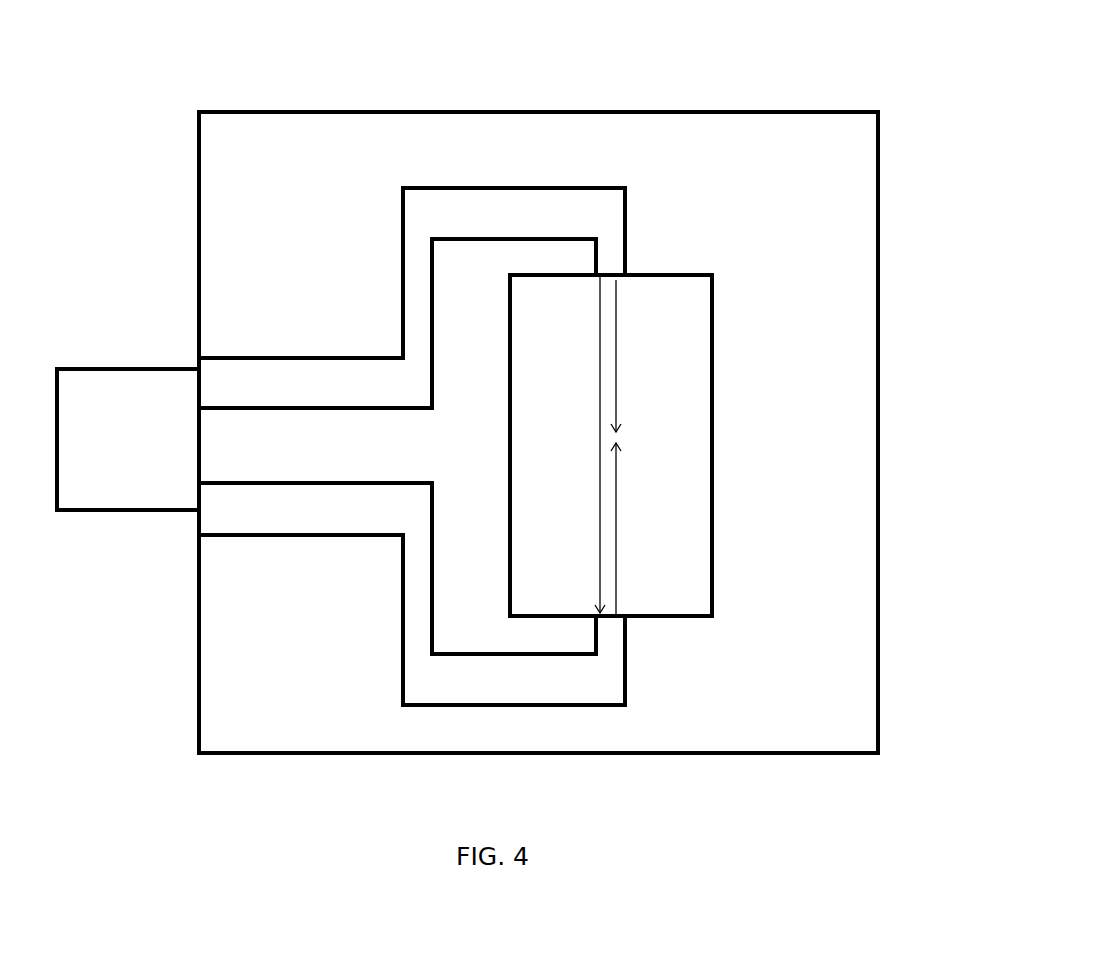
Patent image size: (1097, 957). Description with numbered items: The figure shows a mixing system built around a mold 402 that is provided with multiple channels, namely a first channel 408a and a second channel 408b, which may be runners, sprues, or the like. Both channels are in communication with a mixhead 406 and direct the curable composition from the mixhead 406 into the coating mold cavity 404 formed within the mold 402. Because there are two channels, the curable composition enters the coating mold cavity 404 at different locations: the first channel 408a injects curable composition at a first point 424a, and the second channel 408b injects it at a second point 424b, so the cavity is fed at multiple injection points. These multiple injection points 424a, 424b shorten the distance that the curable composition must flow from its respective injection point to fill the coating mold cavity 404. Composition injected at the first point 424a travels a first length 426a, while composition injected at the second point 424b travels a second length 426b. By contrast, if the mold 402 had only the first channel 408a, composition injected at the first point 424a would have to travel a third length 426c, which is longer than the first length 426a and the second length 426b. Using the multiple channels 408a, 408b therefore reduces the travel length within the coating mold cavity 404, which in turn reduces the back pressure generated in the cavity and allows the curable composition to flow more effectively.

The mold 402 is at (538, 397).
The coating mold cavity 404 is at (651, 329).
The mixhead 406 is at (120, 414).
The first channel 408a is at (379, 298).
The second channel 408b is at (365, 594).
The first point 424a is at (640, 168).
The second point 424b is at (674, 710).
The first length 426a is at (774, 356).
The second length 426b is at (784, 529).
The third length 426c is at (775, 444).